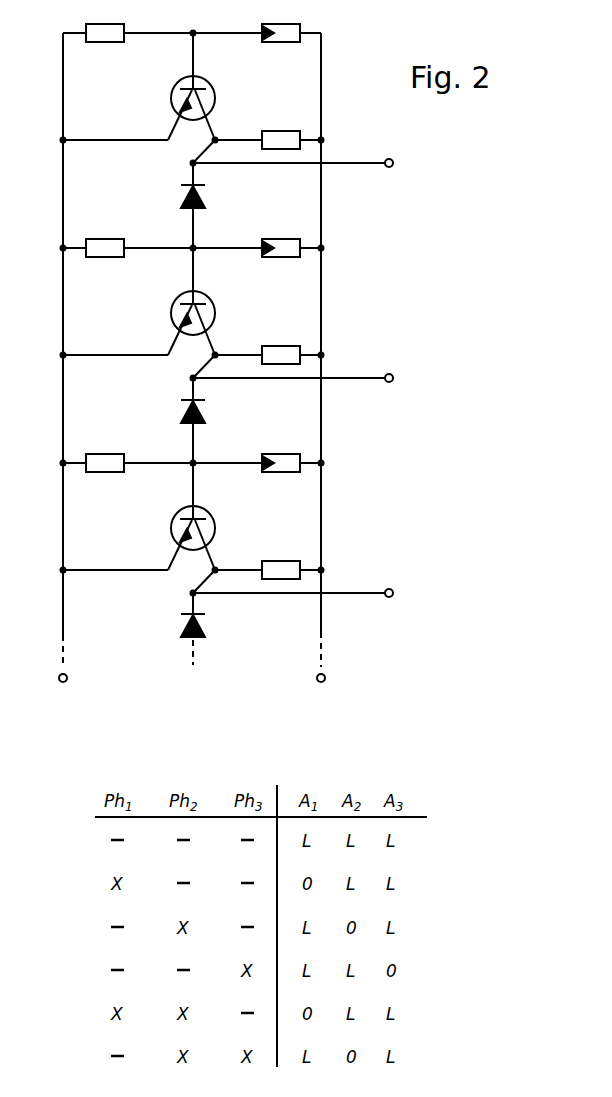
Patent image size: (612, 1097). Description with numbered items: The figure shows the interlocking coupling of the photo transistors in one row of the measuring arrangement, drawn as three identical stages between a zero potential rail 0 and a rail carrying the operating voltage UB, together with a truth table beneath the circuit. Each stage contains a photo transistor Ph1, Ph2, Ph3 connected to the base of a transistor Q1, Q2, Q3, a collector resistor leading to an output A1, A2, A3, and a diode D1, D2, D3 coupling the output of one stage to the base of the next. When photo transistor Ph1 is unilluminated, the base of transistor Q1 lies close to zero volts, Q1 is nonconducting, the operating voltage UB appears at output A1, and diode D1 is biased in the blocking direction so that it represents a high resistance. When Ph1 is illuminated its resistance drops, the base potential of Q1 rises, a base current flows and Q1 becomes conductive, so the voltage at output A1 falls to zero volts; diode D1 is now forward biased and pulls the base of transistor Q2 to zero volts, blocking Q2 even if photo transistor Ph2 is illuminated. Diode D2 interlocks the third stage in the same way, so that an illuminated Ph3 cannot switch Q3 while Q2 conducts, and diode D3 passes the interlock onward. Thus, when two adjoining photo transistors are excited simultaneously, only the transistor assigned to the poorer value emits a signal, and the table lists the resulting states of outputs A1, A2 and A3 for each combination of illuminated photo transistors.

The transistor Q1 is at (204, 108).
The transistor Q2 is at (204, 323).
The transistor Q3 is at (204, 538).
The diode D1 is at (207, 199).
The diode D2 is at (207, 414).
The diode D3 is at (207, 631).
The photo transistor Ph1 is at (281, 49).
The photo transistor Ph2 is at (281, 264).
The photo transistor Ph3 is at (281, 479).
The output A1 is at (306, 165).
The output A2 is at (306, 380).
The output A3 is at (306, 595).
The zero potential 0 is at (62, 710).
The operating voltage UB is at (318, 712).